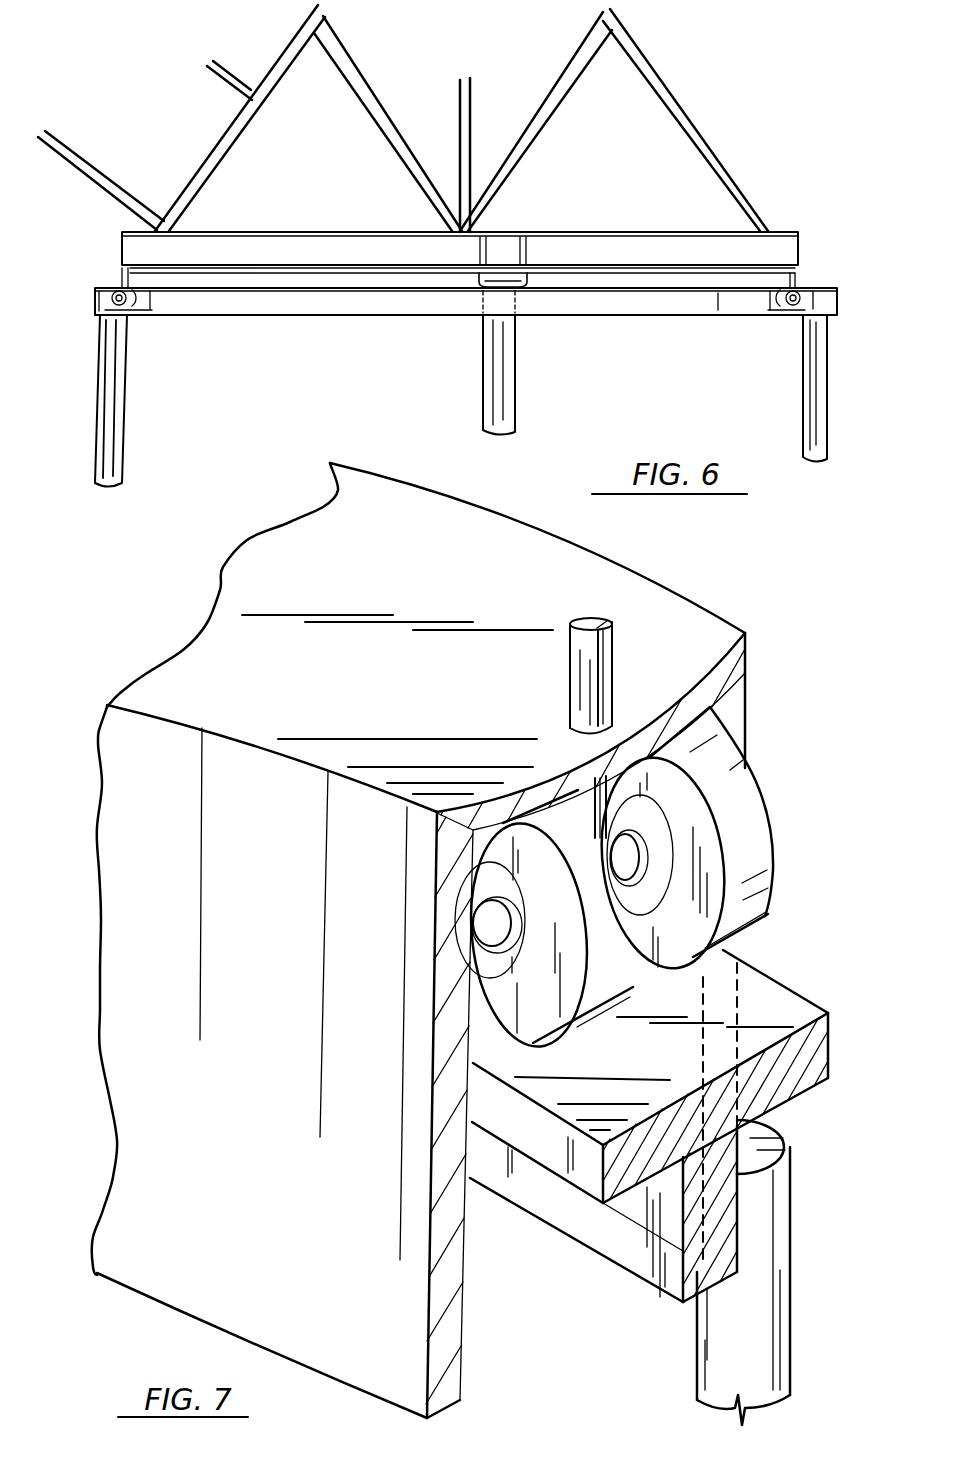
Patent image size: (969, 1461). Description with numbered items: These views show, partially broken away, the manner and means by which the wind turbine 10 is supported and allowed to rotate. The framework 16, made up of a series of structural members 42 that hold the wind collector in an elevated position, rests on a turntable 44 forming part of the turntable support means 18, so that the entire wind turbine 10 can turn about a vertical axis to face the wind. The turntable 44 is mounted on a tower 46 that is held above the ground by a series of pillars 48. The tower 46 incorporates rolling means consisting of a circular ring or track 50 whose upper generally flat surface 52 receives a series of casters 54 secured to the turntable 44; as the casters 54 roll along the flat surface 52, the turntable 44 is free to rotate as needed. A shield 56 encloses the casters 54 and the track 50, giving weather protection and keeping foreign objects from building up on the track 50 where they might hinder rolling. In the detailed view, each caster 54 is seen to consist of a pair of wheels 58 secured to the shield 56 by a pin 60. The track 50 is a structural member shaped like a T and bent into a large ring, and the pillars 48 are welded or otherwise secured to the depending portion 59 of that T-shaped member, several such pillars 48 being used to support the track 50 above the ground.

In FIG. 6, the wind turbine 10 is at (745, 151).
In FIG. 6, the framework 16 is at (641, 45).
In FIG. 6, the turntable support means 18 is at (840, 276).
In FIG. 7, the turntable support means 18 is at (812, 886).
In FIG. 6, the structural members 42 is at (530, 143).
In FIG. 6, the turntable 44 is at (302, 317).
In FIG. 6, the tower 46 is at (836, 336).
In FIG. 6, the pillars 48 is at (124, 420).
In FIG. 7, the pillars 48 is at (792, 1277).
In FIG. 6, the track 50 is at (97, 303).
In FIG. 7, the track 50 is at (830, 1035).
In FIG. 7, the upper generally flat surface 52 is at (778, 990).
In FIG. 7, the casters 54 is at (757, 788).
In FIG. 7, the shield 56 is at (272, 1008).
In FIG. 7, the wheels 58 is at (597, 1020).
In FIG. 7, the depending portion 59 is at (627, 1252).
In FIG. 7, the pin 60 is at (570, 686).